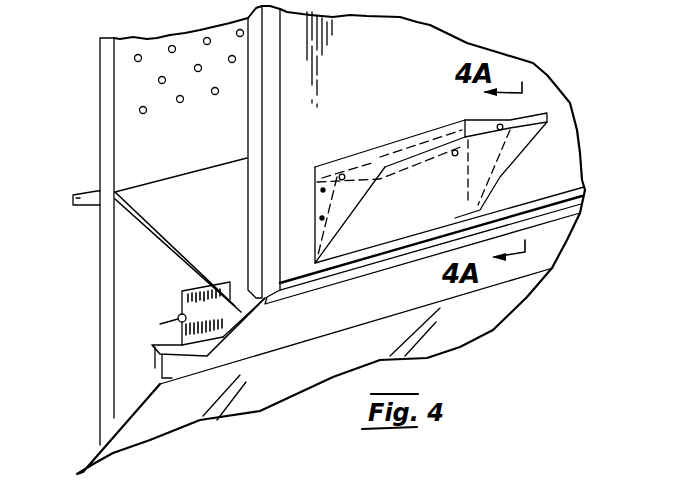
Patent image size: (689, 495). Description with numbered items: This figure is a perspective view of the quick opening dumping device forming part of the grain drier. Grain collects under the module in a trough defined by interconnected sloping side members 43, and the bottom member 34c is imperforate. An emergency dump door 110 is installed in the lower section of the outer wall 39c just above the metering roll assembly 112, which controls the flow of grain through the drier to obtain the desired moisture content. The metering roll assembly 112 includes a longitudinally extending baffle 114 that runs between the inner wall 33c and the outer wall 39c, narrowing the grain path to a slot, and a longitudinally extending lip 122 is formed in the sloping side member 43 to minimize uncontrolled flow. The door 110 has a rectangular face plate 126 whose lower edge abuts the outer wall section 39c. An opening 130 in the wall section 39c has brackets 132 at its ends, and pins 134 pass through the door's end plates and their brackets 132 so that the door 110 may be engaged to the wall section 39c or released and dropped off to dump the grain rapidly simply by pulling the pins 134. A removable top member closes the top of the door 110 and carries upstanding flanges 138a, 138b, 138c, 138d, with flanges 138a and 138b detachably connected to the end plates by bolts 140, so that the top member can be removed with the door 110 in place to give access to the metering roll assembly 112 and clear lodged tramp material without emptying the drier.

The inner wall 33c is at (126, 153).
The bottom member 34c is at (78, 204).
The outer wall 39c is at (332, 82).
The sloping side member 43 is at (282, 326).
The emergency dump door 110 is at (448, 219).
The metering roll assembly 112 is at (160, 312).
The baffle 114 is at (183, 193).
The lip 122 is at (152, 347).
The face plate 126 is at (500, 168).
The opening 130 is at (360, 173).
The bracket 132 is at (320, 218).
The pin 134 is at (321, 190).
The upstanding flange 138a is at (363, 215).
The upstanding flange 138b is at (547, 117).
The upstanding flange 138c is at (420, 137).
The upstanding flange 138d is at (540, 138).
The bolt 140 is at (340, 173).